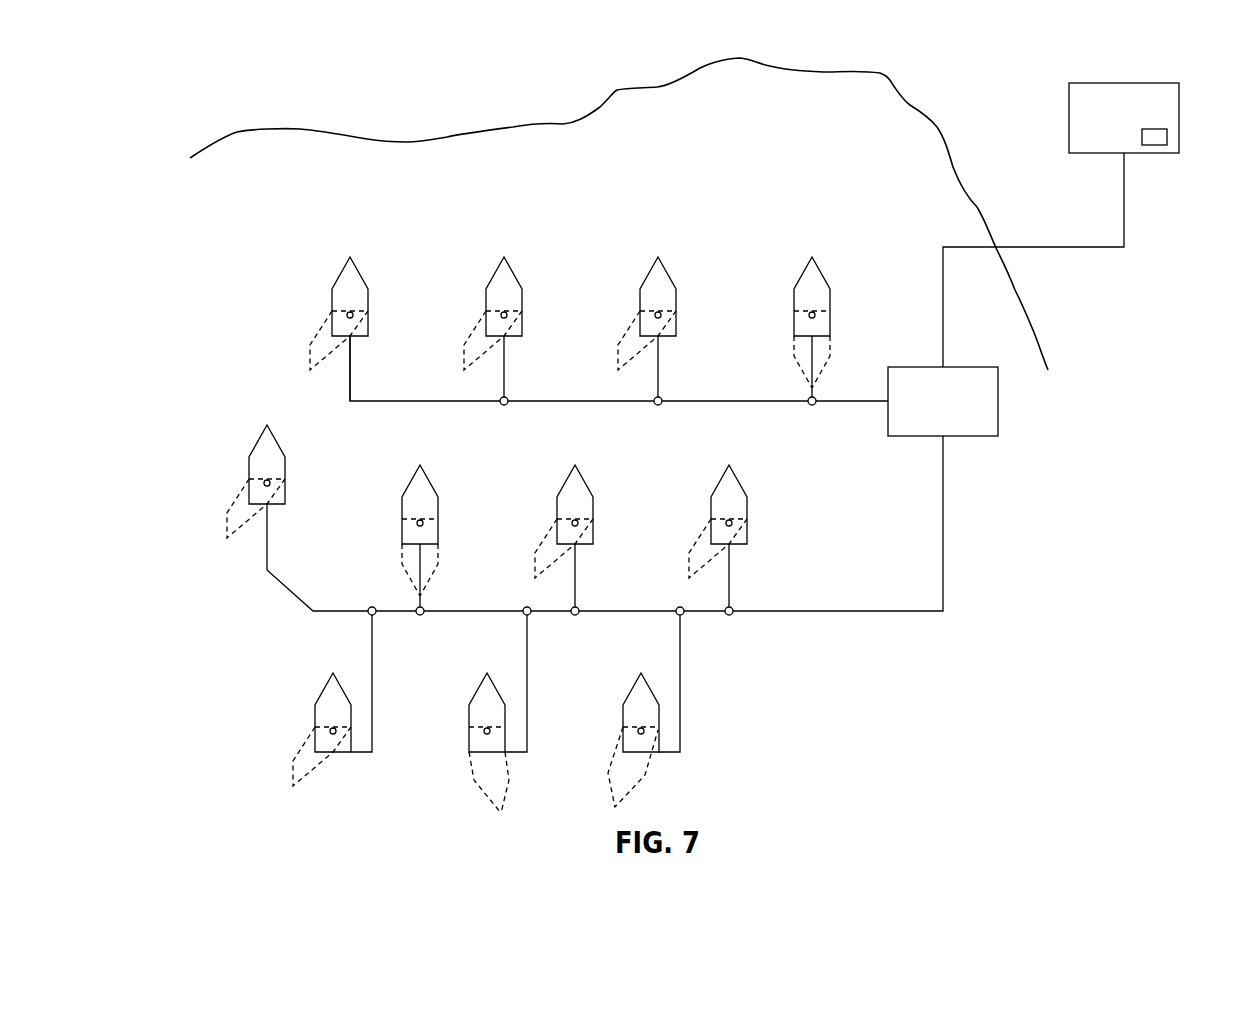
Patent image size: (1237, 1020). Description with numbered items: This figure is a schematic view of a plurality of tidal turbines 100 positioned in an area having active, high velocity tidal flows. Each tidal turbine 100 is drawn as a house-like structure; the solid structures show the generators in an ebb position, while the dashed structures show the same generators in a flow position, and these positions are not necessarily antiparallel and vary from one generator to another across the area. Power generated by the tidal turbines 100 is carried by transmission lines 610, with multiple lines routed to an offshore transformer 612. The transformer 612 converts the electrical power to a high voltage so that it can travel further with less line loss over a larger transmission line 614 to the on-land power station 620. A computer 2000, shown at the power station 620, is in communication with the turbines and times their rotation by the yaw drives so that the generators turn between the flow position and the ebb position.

The tidal turbine 100 is at (358, 272).
The transmission line 610 is at (838, 613).
The offshore transformer 612 is at (987, 405).
The transmission line 614 is at (1088, 248).
The onshore power station 620 is at (1158, 83).
The computer 2000 is at (1155, 137).